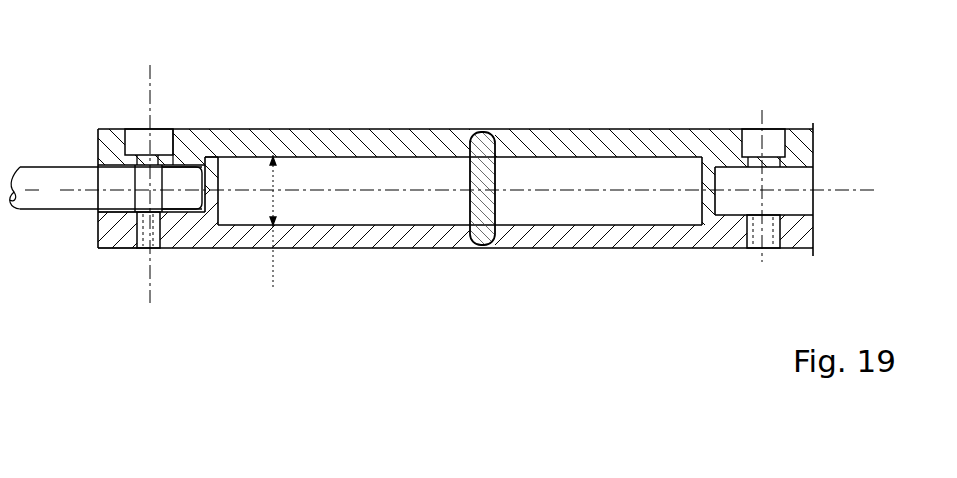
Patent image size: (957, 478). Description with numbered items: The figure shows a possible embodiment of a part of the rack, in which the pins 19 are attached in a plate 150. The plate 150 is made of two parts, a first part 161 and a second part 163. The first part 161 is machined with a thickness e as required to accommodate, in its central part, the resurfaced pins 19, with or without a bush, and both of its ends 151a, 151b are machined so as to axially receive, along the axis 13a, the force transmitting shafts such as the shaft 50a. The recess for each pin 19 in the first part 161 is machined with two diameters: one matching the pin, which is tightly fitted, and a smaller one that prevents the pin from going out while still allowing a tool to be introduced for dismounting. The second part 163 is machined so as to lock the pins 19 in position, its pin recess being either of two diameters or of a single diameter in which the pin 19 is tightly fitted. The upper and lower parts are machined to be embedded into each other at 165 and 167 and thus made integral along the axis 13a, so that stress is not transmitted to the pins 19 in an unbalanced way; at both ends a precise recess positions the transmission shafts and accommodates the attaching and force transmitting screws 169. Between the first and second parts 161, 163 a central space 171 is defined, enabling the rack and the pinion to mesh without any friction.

The plate 150 is at (817, 144).
The end of the first part 151a is at (802, 200).
The end of the first part 151b is at (110, 247).
The shaft 50a is at (48, 180).
The attaching and force transmitting screws 169 is at (153, 142).
The second part 163 is at (187, 143).
The embedding recess 165 is at (205, 157).
The first part 161 is at (193, 228).
The embedding recess 167 is at (710, 160).
The central space 171 is at (622, 208).
The axis 13a is at (295, 190).
The pin 19 is at (478, 142).
The thickness e is at (280, 225).